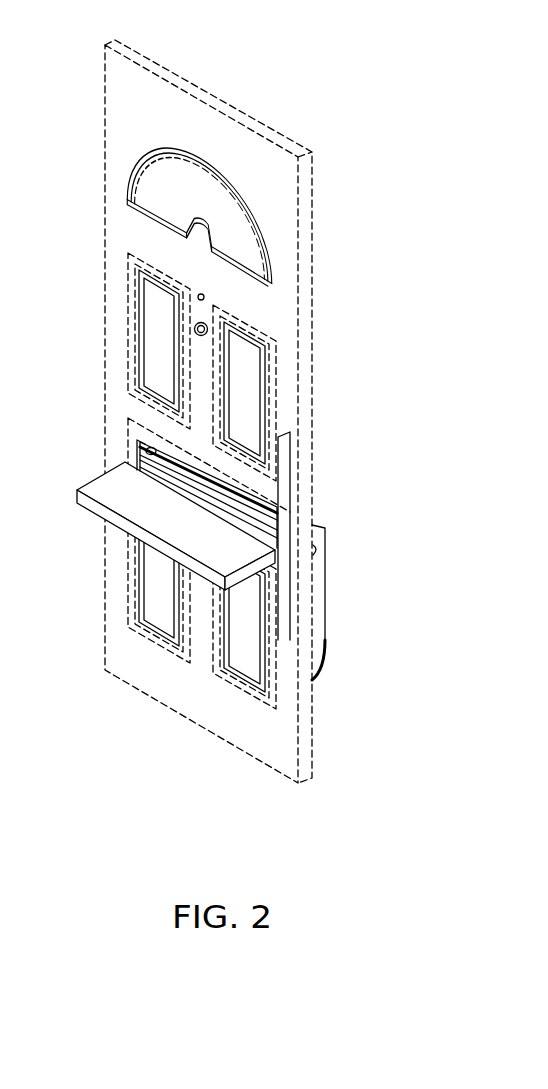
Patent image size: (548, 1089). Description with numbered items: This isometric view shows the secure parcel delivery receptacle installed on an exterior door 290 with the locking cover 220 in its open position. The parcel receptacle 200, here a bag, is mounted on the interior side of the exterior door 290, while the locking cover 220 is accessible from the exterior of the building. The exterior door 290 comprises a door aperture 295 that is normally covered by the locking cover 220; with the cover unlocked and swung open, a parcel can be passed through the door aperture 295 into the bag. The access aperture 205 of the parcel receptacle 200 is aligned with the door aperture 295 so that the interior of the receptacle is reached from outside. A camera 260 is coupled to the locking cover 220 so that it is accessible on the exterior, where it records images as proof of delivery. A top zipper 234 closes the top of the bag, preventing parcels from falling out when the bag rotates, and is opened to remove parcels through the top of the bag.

The exterior door 290 is at (282, 138).
The camera 260 is at (208, 325).
The door aperture 295 is at (135, 441).
The top zipper 234 is at (217, 480).
The access aperture 205 is at (278, 500).
The locking cover 220 is at (88, 505).
The parcel receptacle 200 is at (322, 608).